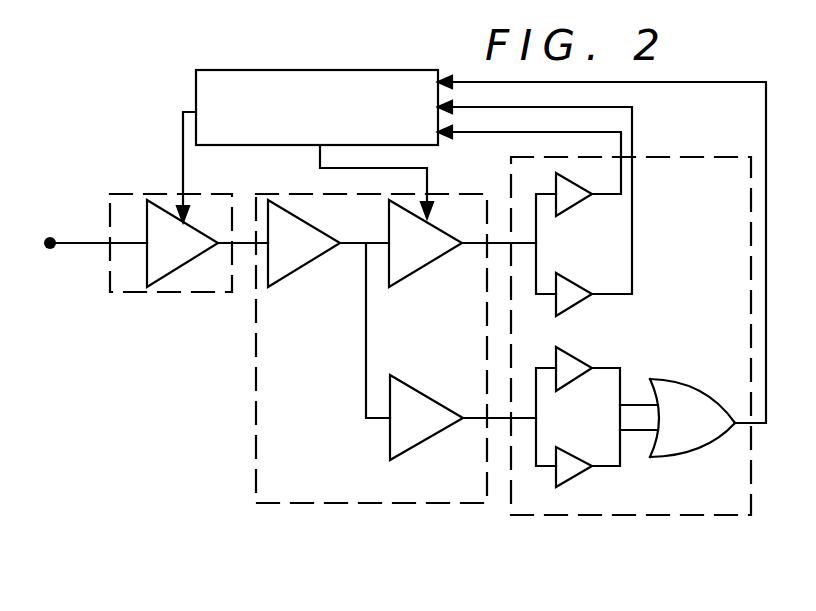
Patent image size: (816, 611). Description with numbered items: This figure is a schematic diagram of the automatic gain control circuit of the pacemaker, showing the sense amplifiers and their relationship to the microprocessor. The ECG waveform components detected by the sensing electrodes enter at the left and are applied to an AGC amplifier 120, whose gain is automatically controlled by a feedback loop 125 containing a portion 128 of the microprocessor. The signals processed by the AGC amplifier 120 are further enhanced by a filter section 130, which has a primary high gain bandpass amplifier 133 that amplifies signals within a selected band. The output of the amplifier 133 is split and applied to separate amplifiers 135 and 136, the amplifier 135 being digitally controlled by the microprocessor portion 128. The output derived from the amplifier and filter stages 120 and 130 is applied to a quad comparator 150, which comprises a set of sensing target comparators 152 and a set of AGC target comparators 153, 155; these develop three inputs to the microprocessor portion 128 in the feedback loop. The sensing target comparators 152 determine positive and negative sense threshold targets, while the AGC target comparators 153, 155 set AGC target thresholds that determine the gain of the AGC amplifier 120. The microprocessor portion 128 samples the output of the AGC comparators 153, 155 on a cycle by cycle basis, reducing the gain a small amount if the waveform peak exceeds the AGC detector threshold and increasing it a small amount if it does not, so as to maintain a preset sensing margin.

The AGC amplifier 120 is at (212, 278).
The feedback loop 125 is at (183, 145).
The microprocessor portion 128 is at (282, 78).
The filter section 130 is at (363, 348).
The primary high gain bandpass amplifier 133 is at (315, 253).
The amplifier 135 is at (425, 258).
The amplifier 136 is at (433, 430).
The quad comparator 150 is at (648, 510).
The sensing target comparators 152 is at (572, 195).
The AGC target comparator 153 is at (588, 362).
The AGC target comparator 155 is at (690, 437).